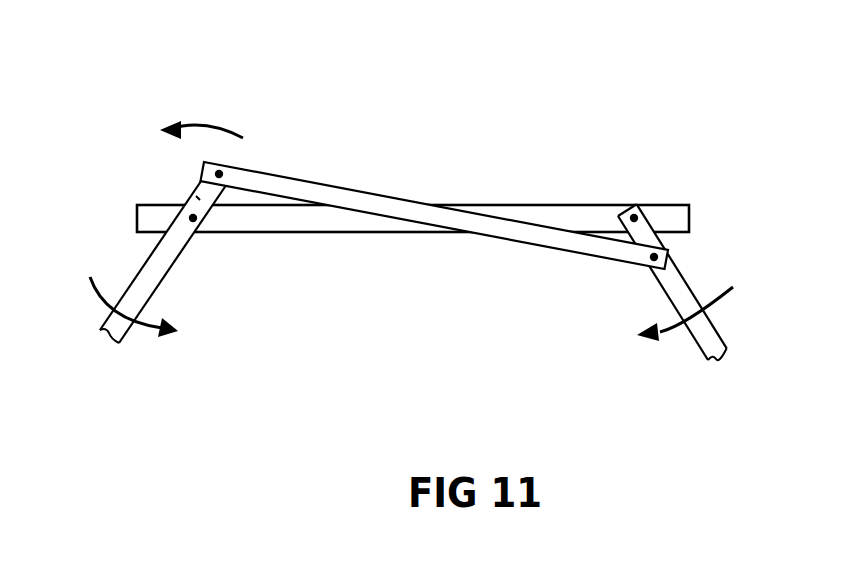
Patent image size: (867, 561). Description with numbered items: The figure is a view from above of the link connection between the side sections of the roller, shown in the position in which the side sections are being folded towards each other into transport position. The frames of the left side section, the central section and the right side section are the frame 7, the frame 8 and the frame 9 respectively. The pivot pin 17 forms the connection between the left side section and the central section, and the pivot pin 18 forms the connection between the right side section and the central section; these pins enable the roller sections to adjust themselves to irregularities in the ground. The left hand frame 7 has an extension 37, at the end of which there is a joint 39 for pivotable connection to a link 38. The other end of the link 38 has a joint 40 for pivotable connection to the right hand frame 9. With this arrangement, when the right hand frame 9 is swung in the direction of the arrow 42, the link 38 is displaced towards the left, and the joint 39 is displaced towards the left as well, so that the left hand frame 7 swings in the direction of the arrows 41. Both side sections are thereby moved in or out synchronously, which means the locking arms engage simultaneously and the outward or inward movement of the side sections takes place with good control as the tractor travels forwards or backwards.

The frame 7 is at (147, 280).
The frame 8 is at (546, 217).
The frame 9 is at (708, 338).
The pivot pin 17 is at (193, 218).
The pivot pin 18 is at (637, 207).
The extension 37 is at (198, 198).
The link 38 is at (380, 207).
The joint 39 is at (221, 172).
The joint 40 is at (655, 256).
The arrows 41 is at (213, 128).
The arrow 42 is at (678, 330).